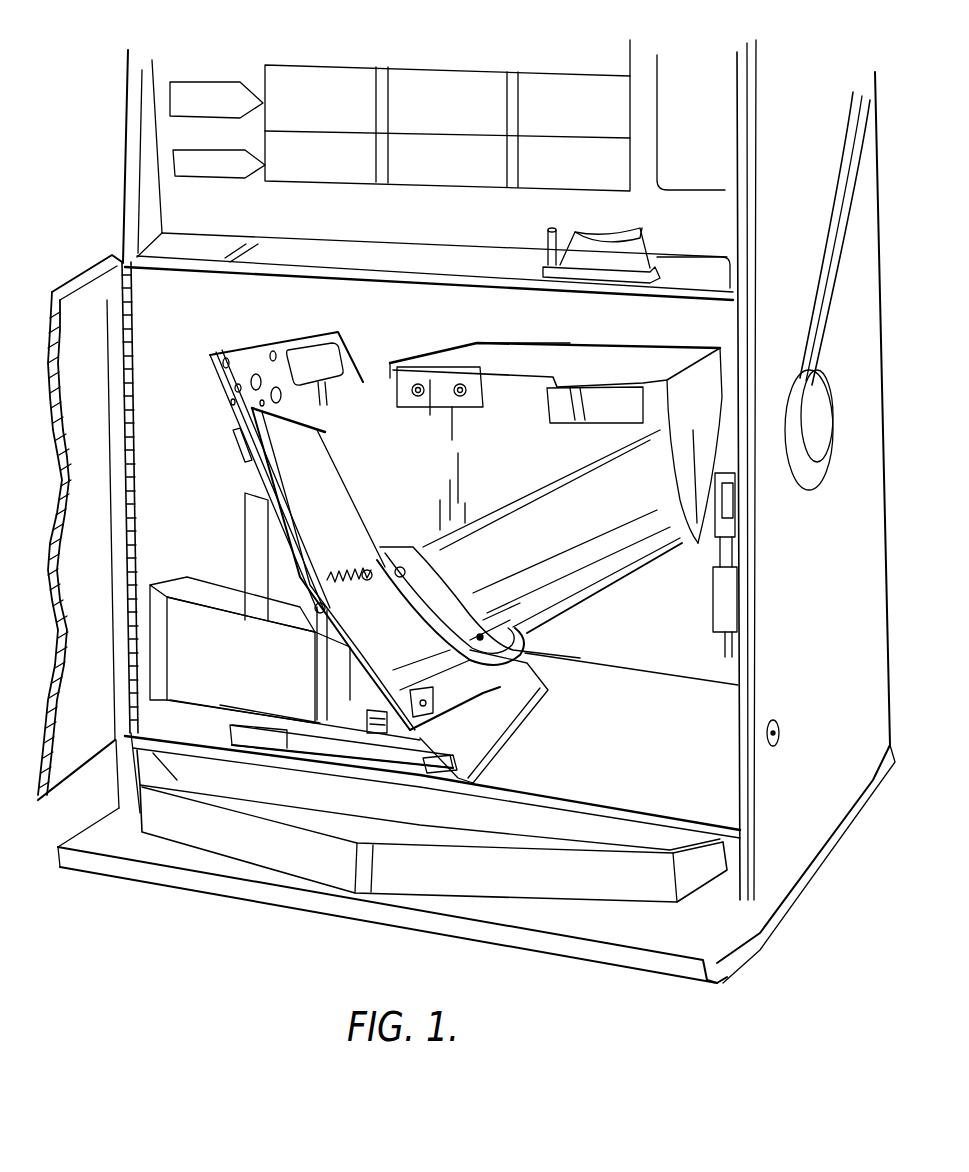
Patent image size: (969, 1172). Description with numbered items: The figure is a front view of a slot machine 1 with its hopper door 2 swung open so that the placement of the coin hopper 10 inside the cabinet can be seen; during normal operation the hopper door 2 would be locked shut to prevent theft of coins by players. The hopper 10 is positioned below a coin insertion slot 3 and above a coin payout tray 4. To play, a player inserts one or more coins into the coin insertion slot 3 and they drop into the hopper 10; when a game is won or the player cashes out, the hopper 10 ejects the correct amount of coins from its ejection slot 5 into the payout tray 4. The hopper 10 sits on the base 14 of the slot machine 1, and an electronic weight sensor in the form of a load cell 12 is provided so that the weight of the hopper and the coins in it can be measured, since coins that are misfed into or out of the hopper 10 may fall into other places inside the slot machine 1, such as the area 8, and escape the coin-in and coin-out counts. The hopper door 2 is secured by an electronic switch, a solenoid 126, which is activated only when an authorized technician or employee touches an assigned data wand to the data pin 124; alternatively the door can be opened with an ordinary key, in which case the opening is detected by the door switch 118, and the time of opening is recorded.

The slot machine 1 is at (581, 50).
The hopper door 2 is at (78, 275).
The coin insertion slot 3 is at (650, 243).
The coin payout tray 4 is at (497, 863).
The ejection slot 5 is at (252, 473).
The area 8 is at (674, 738).
The coin hopper 10 is at (523, 467).
The load cell 12 is at (473, 757).
The base 14 is at (500, 700).
The door switch 118 is at (735, 505).
The data pin 124 is at (779, 722).
The solenoid 126 is at (740, 608).